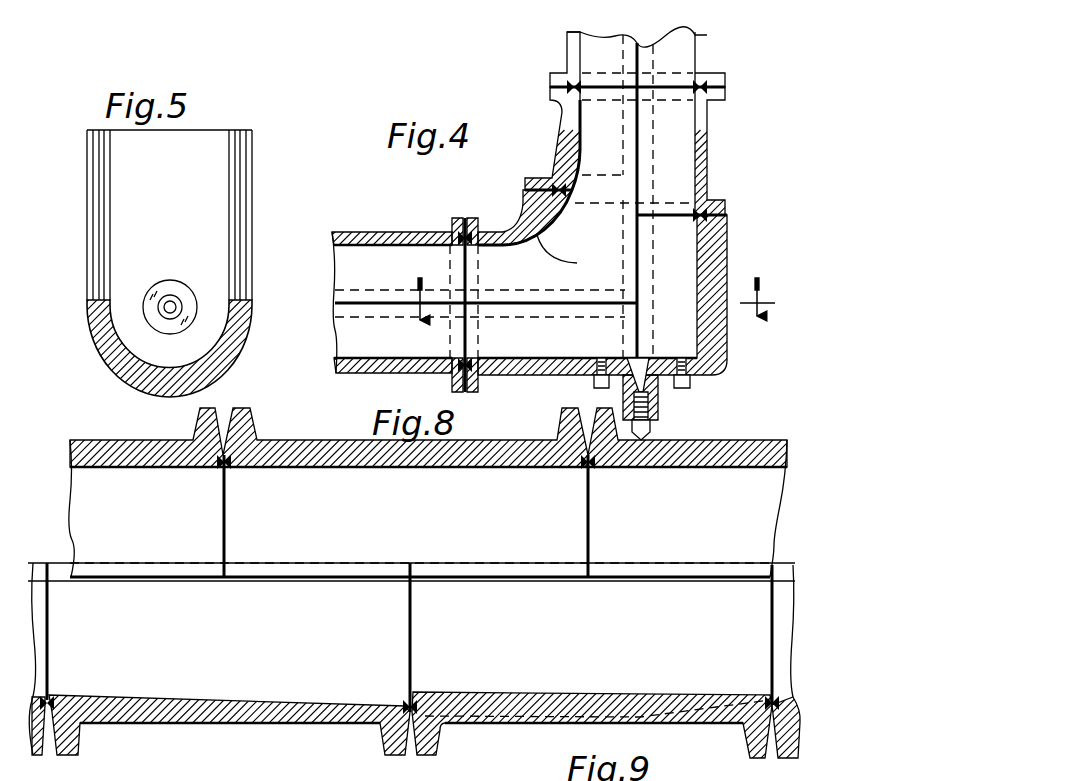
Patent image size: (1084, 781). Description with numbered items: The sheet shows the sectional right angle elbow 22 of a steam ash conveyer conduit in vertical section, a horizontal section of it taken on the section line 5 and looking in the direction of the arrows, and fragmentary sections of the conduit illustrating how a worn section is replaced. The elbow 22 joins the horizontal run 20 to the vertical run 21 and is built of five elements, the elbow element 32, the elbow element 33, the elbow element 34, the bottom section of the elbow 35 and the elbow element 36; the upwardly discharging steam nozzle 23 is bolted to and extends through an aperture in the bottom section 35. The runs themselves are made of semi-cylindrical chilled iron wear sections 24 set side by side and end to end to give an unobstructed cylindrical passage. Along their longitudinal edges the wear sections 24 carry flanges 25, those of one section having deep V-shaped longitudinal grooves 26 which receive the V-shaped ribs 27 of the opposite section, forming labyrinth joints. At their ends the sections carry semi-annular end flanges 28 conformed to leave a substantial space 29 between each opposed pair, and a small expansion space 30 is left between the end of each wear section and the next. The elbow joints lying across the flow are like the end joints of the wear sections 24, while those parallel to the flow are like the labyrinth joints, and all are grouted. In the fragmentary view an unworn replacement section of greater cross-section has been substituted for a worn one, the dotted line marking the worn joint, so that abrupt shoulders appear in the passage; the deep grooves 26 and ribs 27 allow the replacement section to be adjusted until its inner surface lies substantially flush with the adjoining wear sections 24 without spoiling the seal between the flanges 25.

In FIG. 4, the section line 5— 5 is at (595, 304).
In FIG. 4, the horizontal run 20 is at (345, 233).
In FIG. 4, the vertical run 21 is at (648, 41).
In FIG. 4, the sectional right angle elbow 22 is at (527, 208).
In FIG. 5, the steam nozzle 23 is at (173, 298).
In FIG. 4, the steam nozzle 23 is at (660, 412).
In FIG. 4, the semi-cylindrical wear section 24 is at (567, 57).
In FIG. 8, the semi-cylindrical wear section 24 is at (120, 432).
In FIG. 4, the longitudinal flange 25 is at (650, 171).
In FIG. 8, the V-shaped longitudinal groove 26 is at (499, 771).
In FIG. 8, the V-shaped rib 27 is at (47, 567).
In FIG. 4, the semi-annular end flange 28 is at (468, 218).
In FIG. 8, the semi-annular end flange 28 is at (207, 402).
In FIG. 4, the space between end flanges 29 is at (717, 212).
In FIG. 8, the space between end flanges 29 is at (198, 420).
In FIG. 4, the expansion space 30 is at (603, 76).
In FIG. 8, the expansion space 30 is at (227, 556).
In FIG. 4, the elbow element 32 is at (571, 146).
In FIG. 4, the elbow element 33 is at (707, 158).
In FIG. 4, the elbow element 34 is at (497, 253).
In FIG. 5, the bottom section of the elbow 35 is at (169, 188).
In FIG. 4, the bottom section of the elbow 35 is at (574, 341).
In FIG. 5, the elbow element 36 is at (120, 366).
In FIG. 4, the elbow element 36 is at (727, 250).